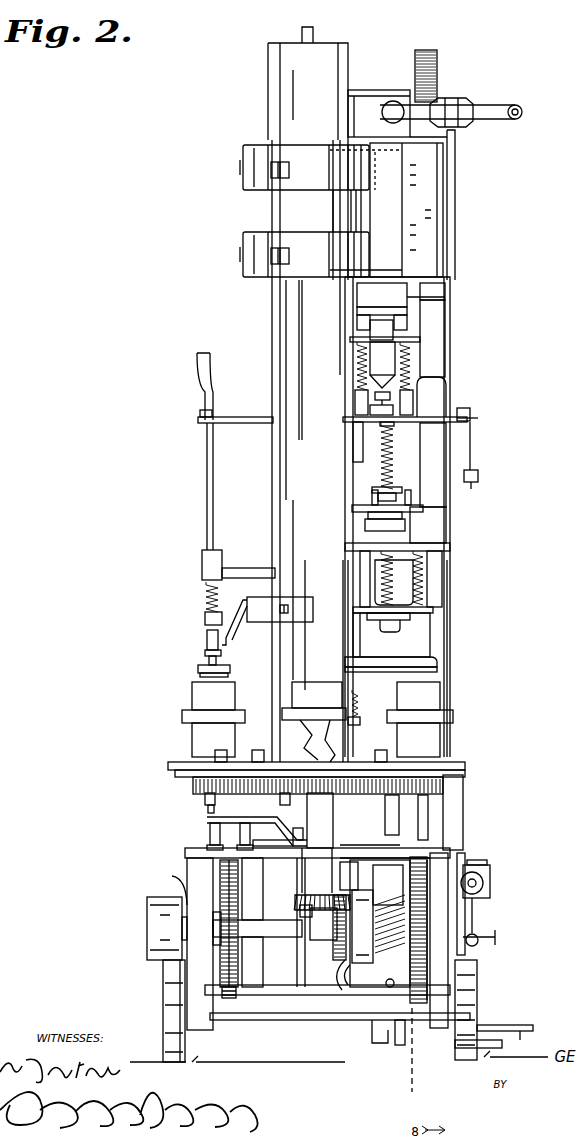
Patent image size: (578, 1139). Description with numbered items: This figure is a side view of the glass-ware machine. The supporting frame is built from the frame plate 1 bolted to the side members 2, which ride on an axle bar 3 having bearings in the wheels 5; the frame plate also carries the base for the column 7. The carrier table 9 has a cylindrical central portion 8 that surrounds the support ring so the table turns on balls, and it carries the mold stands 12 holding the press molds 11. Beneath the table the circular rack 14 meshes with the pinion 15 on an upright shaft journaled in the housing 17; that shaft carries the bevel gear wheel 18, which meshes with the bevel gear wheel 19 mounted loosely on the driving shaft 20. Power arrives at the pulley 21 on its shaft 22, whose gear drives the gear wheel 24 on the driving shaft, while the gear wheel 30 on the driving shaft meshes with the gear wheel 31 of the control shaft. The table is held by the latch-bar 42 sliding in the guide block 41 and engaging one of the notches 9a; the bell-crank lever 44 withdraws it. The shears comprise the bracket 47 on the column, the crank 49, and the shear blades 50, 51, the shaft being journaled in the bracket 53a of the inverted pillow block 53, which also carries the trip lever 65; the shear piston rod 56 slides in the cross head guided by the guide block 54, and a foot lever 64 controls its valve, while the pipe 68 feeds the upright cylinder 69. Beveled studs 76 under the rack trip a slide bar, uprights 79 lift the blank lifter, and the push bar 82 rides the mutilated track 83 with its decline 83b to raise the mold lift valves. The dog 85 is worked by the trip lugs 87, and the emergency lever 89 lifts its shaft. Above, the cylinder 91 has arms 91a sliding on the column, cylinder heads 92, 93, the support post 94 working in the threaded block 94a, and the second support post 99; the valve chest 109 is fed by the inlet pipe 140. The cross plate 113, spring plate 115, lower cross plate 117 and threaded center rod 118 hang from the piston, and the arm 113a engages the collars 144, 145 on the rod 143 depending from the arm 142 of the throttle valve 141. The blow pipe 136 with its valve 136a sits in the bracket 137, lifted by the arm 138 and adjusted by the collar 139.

The frame plate 1 is at (188, 849).
The side members 2 is at (317, 941).
The axle bar 3 is at (232, 1000).
The wheels 5 is at (163, 1032).
The column 7 is at (272, 332).
The cylindrical central portion 8 is at (390, 812).
The carrier table 9 is at (463, 762).
The notches 9a is at (218, 786).
The press molds 11 is at (317, 702).
The mold stands 12 is at (316, 740).
The circular rack 14 is at (195, 785).
The pinion 15 is at (319, 795).
The housing 17 is at (317, 870).
The bevel gear wheel 18 is at (297, 900).
The bevel gear wheel 19 is at (340, 968).
The driving shaft 20 is at (257, 922).
The pulley 21 is at (167, 928).
The shaft 22 is at (172, 877).
The gear wheel 24 is at (228, 1000).
The gear wheel 30 is at (428, 942).
The gear wheel 31 is at (427, 900).
The guide block 41 is at (463, 801).
The latch-bar 42 is at (470, 776).
The bell-crank lever 44 is at (465, 851).
The bracket 47 is at (358, 700).
The crank 49 is at (340, 872).
The shear blade 50 is at (440, 670).
The shear blade 51 is at (437, 657).
The inverted pillow block 53 is at (400, 852).
The bracket 53a is at (303, 917).
The guide block 54 is at (484, 880).
The piston rod 56 is at (486, 896).
The foot lever 64 is at (498, 1041).
The trip lever 65 is at (385, 872).
The pipe 68 is at (358, 1046).
The upright cylinder 69 is at (398, 1047).
The beveled studs 76 is at (283, 795).
The uprights 79 is at (452, 690).
The push bar 82 is at (422, 835).
The mutilated track 83 is at (242, 829).
The decline 83b is at (297, 827).
The dog 85 is at (332, 748).
The trip lugs 87 is at (280, 695).
The emergency lever 89 is at (518, 1025).
The cylinder 91 is at (382, 208).
The arms 91a is at (304, 211).
The cylinder head 92 is at (372, 273).
The cylinder head 93 is at (387, 148).
The support post 94 is at (354, 445).
The threaded block 94a is at (340, 205).
The support post 99 is at (451, 579).
The valve chest 109 is at (368, 102).
The cross plate 113 is at (410, 419).
The arm 113a is at (478, 418).
The spring plate 115 is at (420, 340).
The cross plate 117 is at (452, 546).
The threaded center rod 118 is at (394, 449).
The blow pipe 136 is at (213, 490).
The valve 136a is at (197, 662).
The bracket 137 is at (233, 581).
The arm 138 is at (222, 419).
The collar 139 is at (218, 402).
The inlet pipe 140 is at (517, 109).
The throttle valve 141 is at (458, 119).
The arm 142 is at (446, 96).
The rod 143 is at (457, 246).
The collar 144 is at (478, 478).
The collar 145 is at (470, 410).